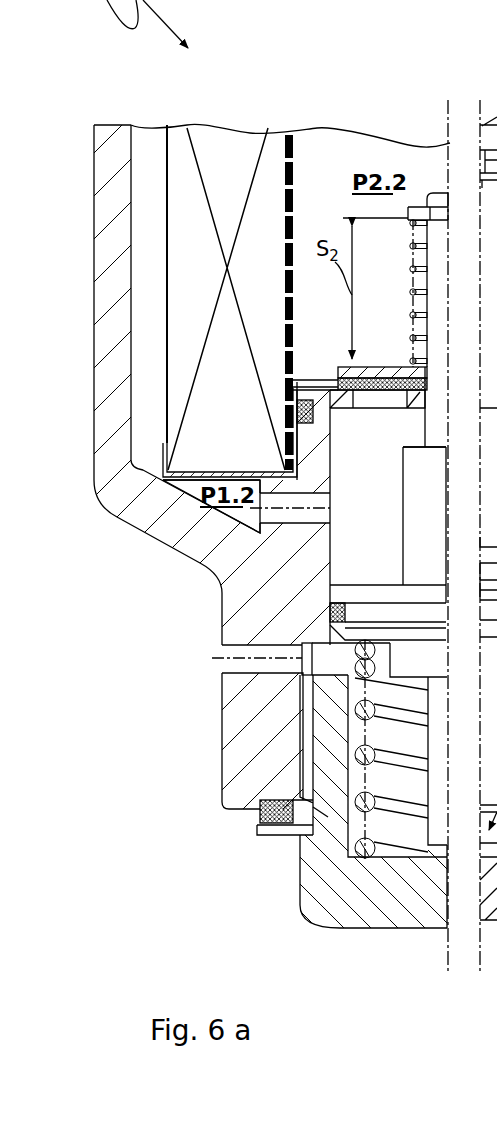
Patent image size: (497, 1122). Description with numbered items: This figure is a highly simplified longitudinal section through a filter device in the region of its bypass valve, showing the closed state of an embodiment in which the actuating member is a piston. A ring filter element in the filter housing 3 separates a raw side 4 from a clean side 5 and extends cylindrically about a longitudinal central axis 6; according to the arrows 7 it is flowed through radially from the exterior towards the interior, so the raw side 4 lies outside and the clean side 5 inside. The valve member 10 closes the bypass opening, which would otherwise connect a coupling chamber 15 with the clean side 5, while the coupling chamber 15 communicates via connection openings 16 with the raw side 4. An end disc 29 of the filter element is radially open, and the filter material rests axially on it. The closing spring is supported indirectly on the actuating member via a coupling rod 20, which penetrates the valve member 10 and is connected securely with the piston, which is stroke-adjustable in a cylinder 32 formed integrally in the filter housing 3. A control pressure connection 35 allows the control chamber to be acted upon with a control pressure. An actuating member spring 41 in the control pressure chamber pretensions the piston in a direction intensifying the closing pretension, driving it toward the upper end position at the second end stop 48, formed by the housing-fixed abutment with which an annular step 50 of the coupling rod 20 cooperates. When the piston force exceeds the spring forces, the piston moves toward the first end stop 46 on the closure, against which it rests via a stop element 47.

The filter housing 3 is at (107, 168).
The raw side 4 is at (152, 258).
The clean side 5 is at (387, 152).
The longitudinal central axis 6 is at (447, 107).
The arrows 7 is at (300, 287).
The valve member 10 is at (383, 358).
The coupling chamber 15 is at (232, 619).
The connection openings 16 is at (270, 515).
The coupling rod 20 is at (417, 500).
The end disc 29 is at (192, 478).
The cylinder 32 is at (333, 456).
The control pressure connection 35 is at (232, 661).
The actuating member spring 41 is at (300, 865).
The first end stop 46 is at (435, 862).
The stop element 47 is at (436, 822).
The second end stop 48 is at (415, 410).
The annular step 50 is at (410, 448).